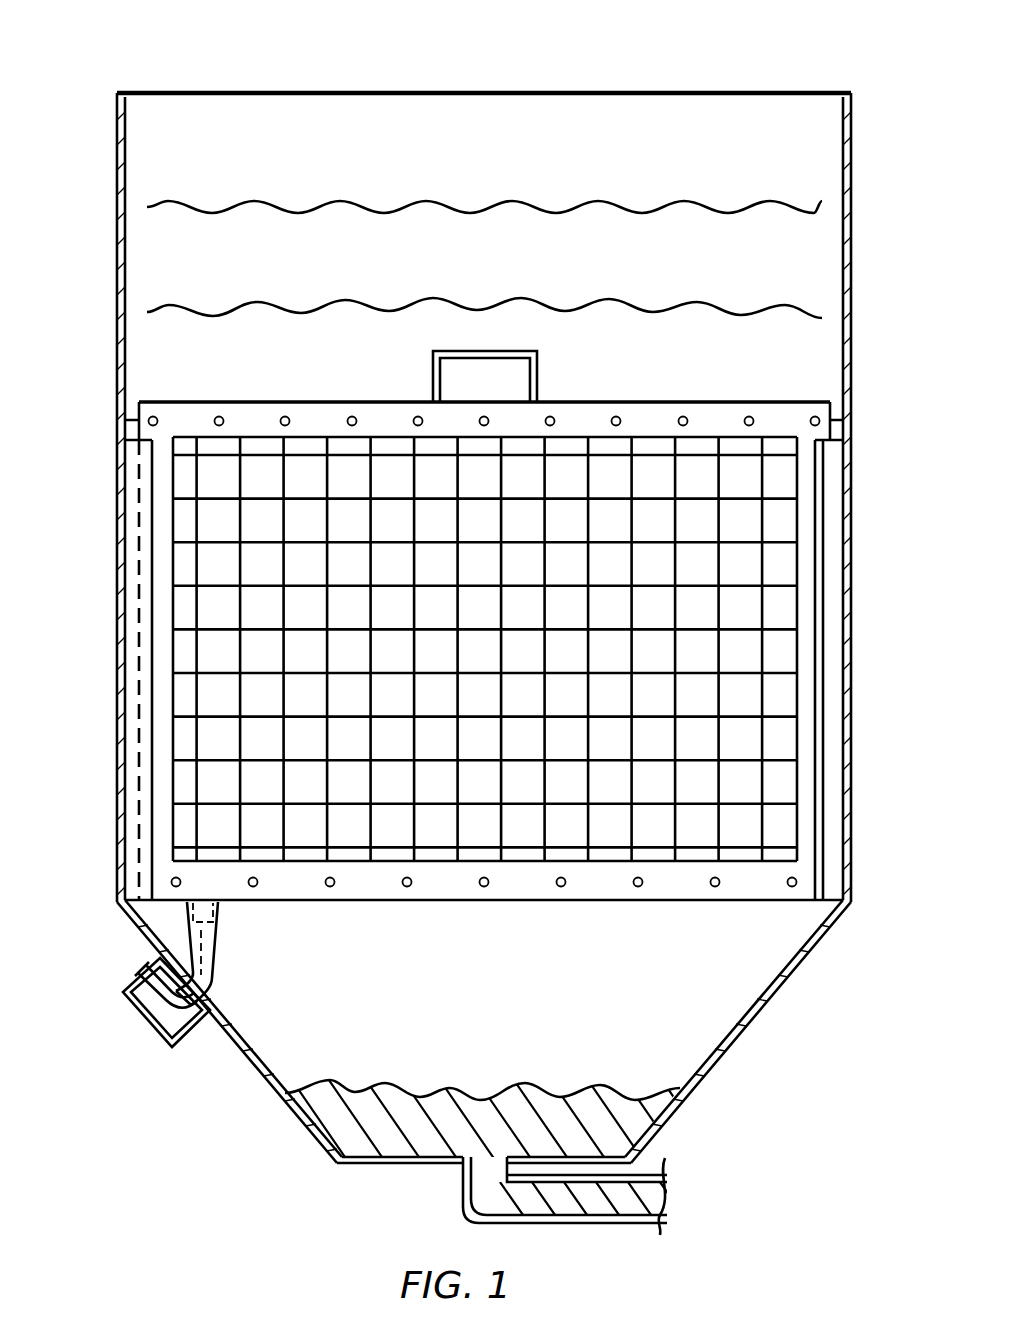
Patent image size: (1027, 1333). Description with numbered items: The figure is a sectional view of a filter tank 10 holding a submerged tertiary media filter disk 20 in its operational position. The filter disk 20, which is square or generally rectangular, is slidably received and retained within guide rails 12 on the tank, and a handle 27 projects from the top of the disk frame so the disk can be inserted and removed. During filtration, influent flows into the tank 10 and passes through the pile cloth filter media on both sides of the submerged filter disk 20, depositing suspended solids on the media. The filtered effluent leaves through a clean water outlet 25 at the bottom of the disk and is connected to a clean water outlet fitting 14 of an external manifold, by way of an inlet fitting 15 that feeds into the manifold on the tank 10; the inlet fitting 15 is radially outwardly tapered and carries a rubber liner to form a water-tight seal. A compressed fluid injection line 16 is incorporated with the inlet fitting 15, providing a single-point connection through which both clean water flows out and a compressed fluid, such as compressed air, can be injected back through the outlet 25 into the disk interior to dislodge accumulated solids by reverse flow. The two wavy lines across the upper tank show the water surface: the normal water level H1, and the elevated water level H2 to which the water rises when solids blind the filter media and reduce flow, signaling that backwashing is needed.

The filter tank 10 is at (117, 110).
The guide rails 12 is at (140, 503).
The clean water outlet fitting 14 is at (190, 1040).
The inlet fitting 15 is at (214, 960).
The compressed fluid injection line 16 is at (143, 988).
The tertiary media filter disk 20 is at (192, 660).
The clean water outlet 25 is at (222, 903).
The handle 27 is at (537, 375).
The normal water level H1 is at (630, 312).
The elevated water level H2 is at (643, 207).